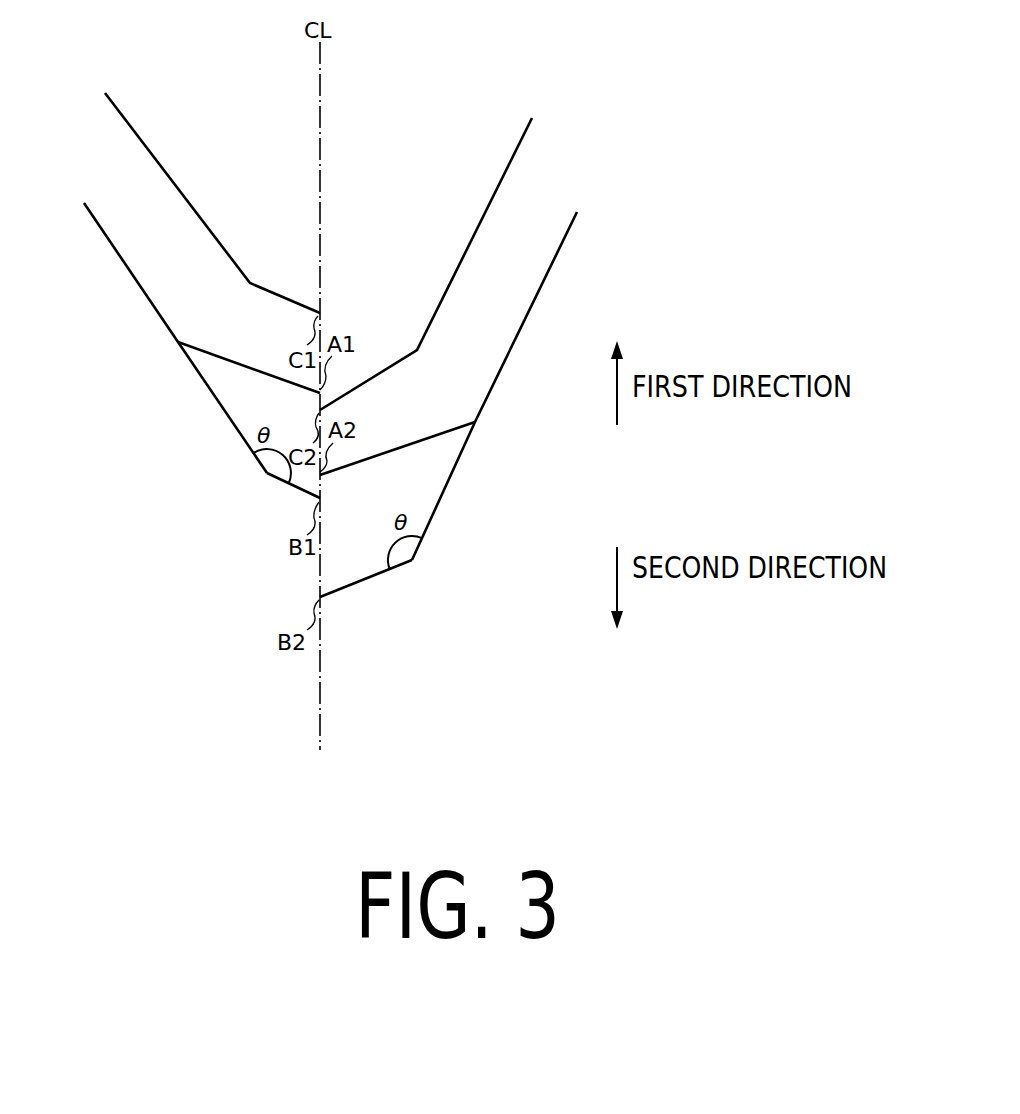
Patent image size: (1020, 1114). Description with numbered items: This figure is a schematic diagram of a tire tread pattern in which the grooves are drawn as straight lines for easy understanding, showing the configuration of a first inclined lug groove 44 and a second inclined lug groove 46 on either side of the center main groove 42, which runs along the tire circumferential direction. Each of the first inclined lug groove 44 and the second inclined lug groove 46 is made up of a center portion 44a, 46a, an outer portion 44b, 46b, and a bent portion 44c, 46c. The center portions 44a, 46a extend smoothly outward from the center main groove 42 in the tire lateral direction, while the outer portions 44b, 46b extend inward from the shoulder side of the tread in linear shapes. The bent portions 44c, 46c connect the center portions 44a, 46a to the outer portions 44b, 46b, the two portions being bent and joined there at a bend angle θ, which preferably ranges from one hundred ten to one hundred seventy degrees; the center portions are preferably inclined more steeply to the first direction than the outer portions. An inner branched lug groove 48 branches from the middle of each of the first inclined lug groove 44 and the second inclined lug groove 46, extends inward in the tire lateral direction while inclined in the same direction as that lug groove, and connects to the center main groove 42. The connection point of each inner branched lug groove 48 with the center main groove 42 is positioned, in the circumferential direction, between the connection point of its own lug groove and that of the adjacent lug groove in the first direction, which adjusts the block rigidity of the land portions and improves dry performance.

The center main groove 42 is at (320, 243).
The first inclined lug groove 44 is at (189, 316).
The center portion 44a is at (284, 481).
The outer portion 44b is at (212, 393).
The bent portion 44c is at (263, 473).
The second inclined lug groove 46 is at (467, 380).
The center portion 46a is at (365, 579).
The outer portion 46b is at (455, 467).
The bent portion 46c is at (414, 560).
The inner branched lug groove 48 is at (228, 355).